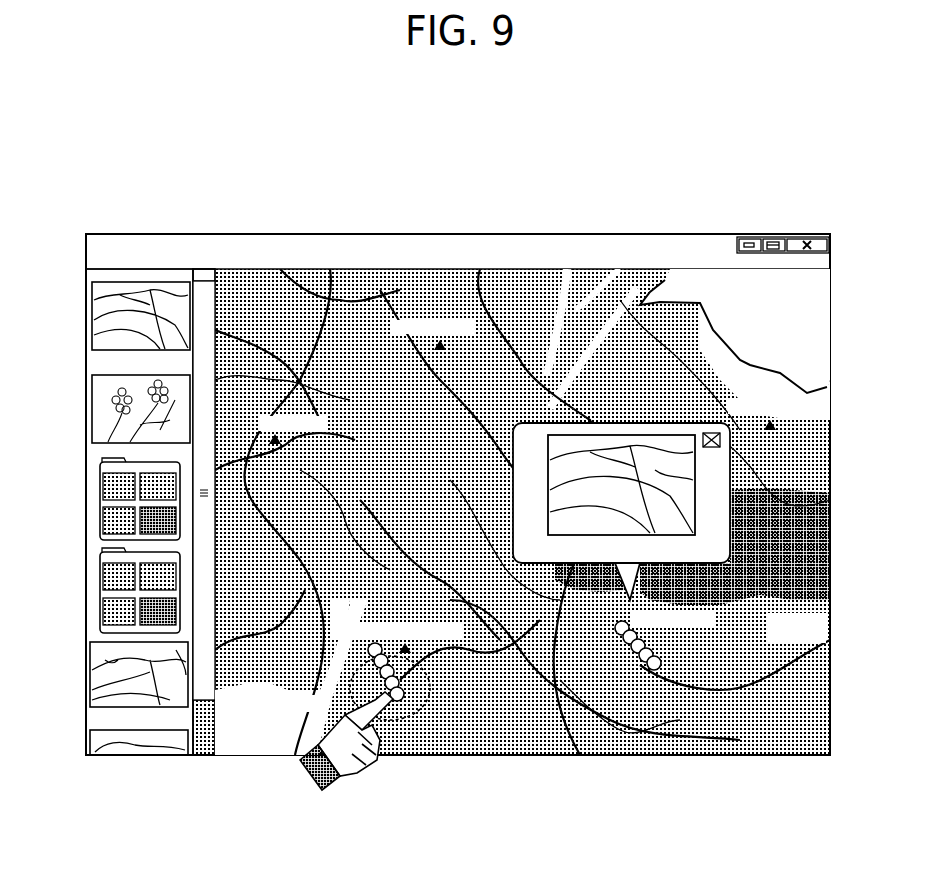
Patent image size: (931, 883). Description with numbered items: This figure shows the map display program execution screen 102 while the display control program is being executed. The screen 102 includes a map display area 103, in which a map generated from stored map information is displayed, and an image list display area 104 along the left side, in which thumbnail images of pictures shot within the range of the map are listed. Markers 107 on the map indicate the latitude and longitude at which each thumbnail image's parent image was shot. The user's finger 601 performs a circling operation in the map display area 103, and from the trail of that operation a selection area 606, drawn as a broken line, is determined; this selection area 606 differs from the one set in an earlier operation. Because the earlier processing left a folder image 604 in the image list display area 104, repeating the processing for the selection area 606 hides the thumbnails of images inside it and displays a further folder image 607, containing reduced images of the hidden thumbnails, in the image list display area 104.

The map display program execution screen 102 is at (727, 172).
The map display area 103 is at (350, 278).
The image list display area 104 is at (173, 273).
The markers 107 is at (400, 720).
The user's finger 601 is at (343, 790).
The folder image 604 is at (100, 470).
The selection area 606 is at (412, 722).
The folder image 607 is at (100, 562).